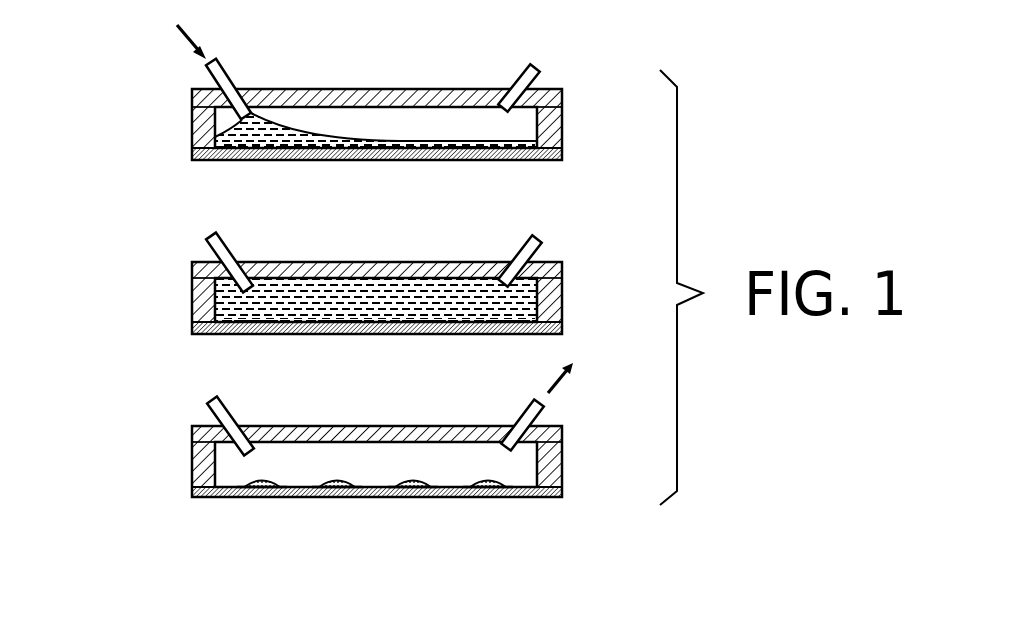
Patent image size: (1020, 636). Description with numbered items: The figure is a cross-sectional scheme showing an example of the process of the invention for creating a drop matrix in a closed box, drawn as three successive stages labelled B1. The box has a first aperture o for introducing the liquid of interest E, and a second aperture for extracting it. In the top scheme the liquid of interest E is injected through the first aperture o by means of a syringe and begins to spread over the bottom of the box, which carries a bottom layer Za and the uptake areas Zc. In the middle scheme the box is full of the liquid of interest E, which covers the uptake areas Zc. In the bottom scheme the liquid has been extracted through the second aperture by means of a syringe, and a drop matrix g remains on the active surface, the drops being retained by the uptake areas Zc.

The substrate / process stage B1 is at (140, 170).
The first aperture o is at (241, 87).
The liquid of interest E is at (247, 133).
The bottom plate layer Za is at (308, 161).
The uptake areas Zc is at (461, 321).
The drop matrix g is at (267, 497).